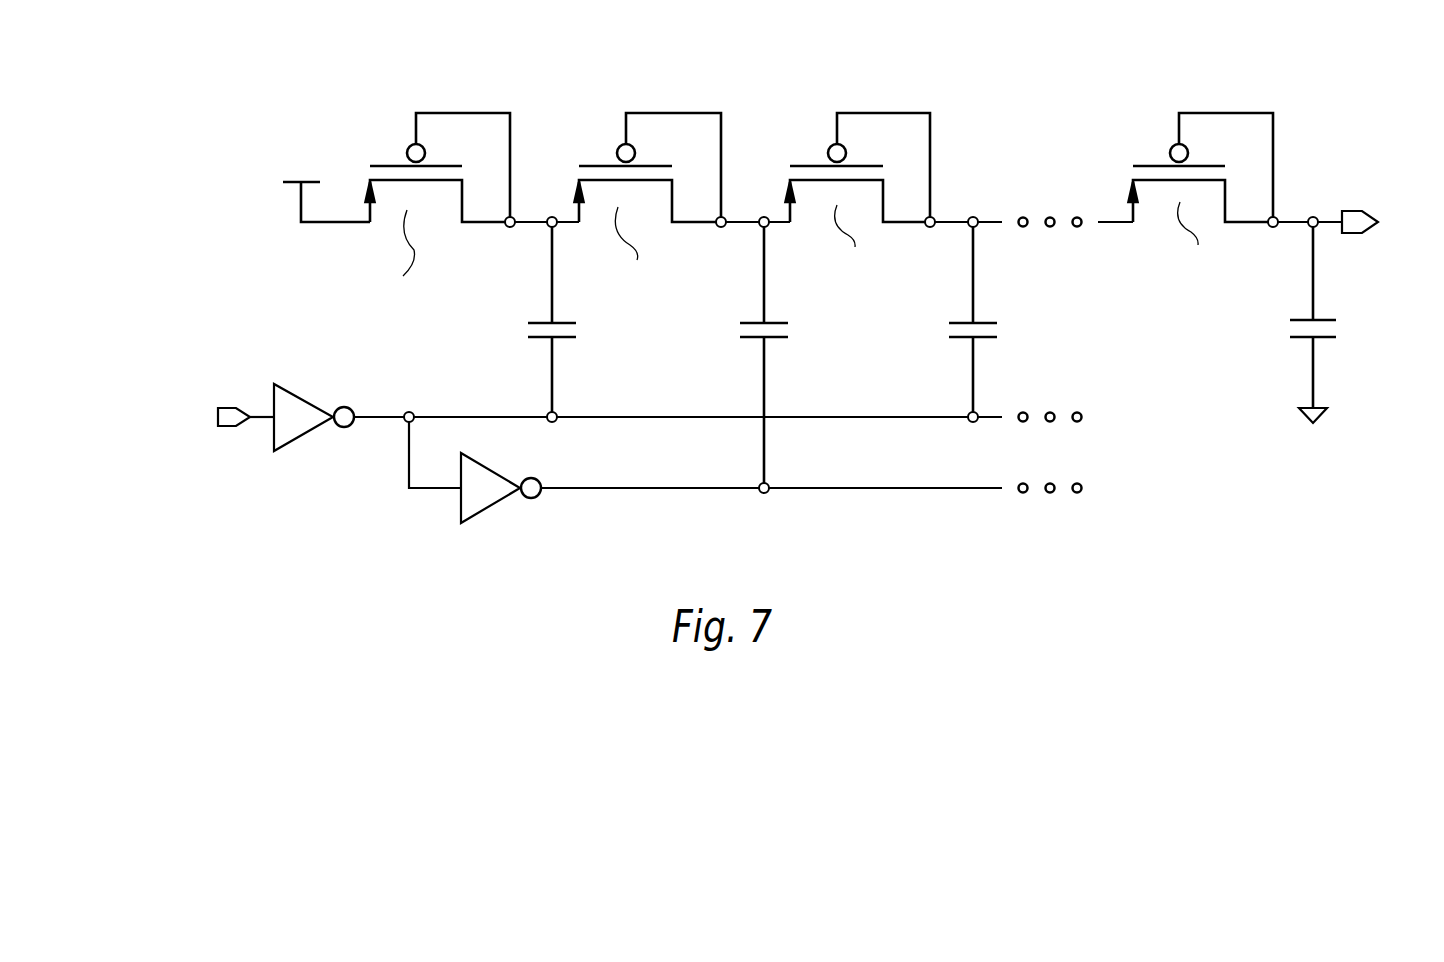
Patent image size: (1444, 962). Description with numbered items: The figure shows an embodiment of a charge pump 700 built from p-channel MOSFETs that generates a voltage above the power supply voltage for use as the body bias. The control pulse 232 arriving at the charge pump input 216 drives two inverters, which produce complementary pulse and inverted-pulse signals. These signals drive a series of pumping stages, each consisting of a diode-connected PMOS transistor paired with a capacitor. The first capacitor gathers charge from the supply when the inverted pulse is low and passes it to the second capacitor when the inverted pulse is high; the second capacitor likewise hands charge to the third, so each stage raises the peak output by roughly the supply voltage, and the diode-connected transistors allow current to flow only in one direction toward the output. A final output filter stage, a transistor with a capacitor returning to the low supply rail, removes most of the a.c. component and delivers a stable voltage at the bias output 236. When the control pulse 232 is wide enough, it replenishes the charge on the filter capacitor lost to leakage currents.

The charge pump 700 is at (790, 329).
The charge pump input 216 is at (220, 442).
The control pulse 232 is at (260, 427).
The V_BIAS 236 is at (1362, 233).